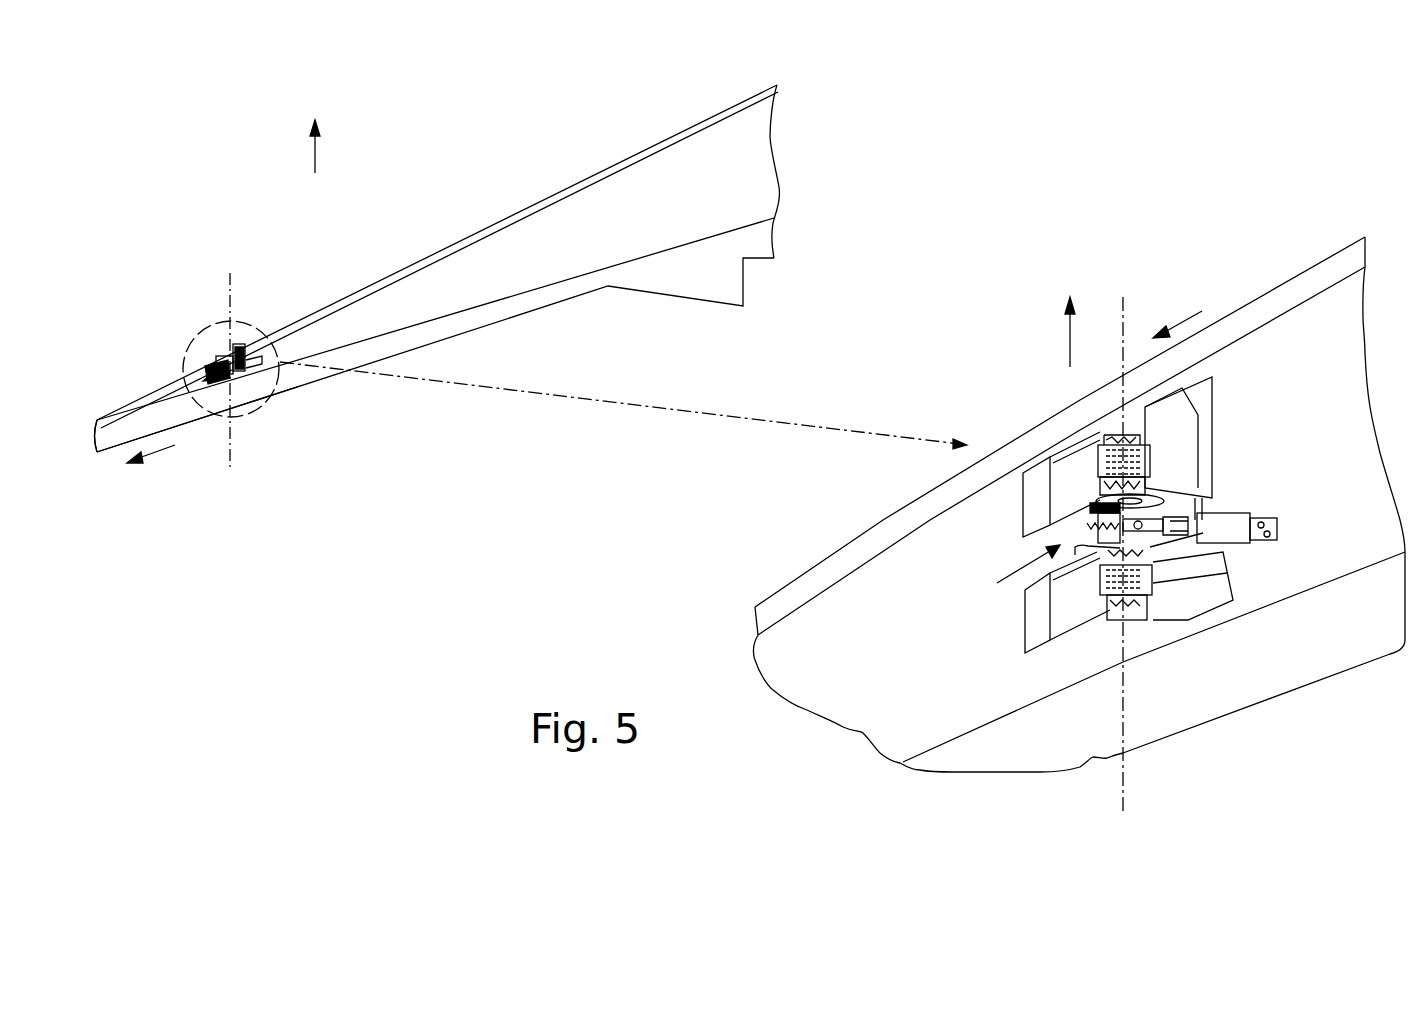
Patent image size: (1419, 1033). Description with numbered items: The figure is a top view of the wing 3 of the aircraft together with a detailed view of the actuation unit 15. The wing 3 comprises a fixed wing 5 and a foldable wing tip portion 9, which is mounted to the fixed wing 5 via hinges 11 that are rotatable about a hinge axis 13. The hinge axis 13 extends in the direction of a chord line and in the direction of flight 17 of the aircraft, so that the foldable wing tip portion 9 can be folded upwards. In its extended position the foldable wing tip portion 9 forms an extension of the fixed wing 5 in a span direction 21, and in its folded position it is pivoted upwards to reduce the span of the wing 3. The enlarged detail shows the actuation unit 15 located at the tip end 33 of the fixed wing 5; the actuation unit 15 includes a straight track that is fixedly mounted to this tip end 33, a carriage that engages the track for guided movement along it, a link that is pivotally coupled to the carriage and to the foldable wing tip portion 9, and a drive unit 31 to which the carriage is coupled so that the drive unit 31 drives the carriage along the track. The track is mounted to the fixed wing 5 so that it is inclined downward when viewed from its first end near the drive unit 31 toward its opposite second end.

The wing 3 is at (256, 200).
The fixed wing 5 is at (613, 225).
The foldable wing tip portion 9 is at (140, 412).
The hinges 11 is at (1109, 645).
The hinge axis 13 is at (232, 302).
The actuation unit 15 is at (214, 386).
The direction of flight 17 is at (318, 160).
The span direction 21 is at (160, 450).
The drive unit 31 is at (1240, 516).
The tip end 33 is at (262, 330).